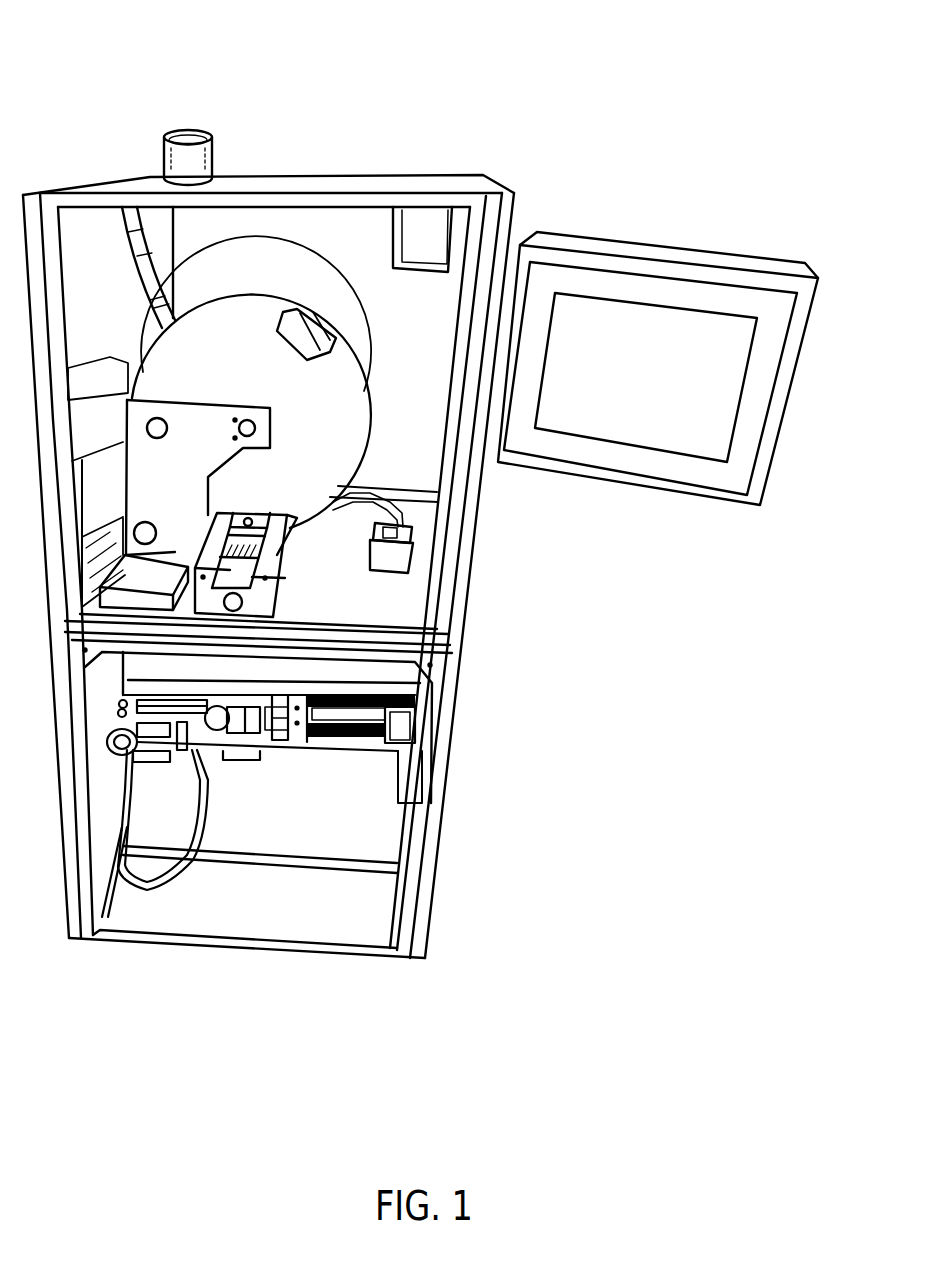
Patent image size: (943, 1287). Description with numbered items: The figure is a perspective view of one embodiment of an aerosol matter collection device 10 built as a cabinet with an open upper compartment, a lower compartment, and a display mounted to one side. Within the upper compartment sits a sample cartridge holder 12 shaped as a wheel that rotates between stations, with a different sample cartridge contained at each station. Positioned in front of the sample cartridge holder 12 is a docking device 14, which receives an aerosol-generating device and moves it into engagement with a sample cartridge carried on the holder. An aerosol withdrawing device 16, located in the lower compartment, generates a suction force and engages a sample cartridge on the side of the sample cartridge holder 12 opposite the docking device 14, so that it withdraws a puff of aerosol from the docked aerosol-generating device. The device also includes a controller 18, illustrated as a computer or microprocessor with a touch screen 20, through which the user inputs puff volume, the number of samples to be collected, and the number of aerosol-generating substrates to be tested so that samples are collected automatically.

The aerosol matter collection device 10 is at (445, 106).
The sample cartridge holder 12 is at (343, 450).
The docking device 14 is at (280, 553).
The aerosol withdrawing device 16 is at (392, 727).
The controller 18 is at (652, 250).
The touch screen 20 is at (687, 423).